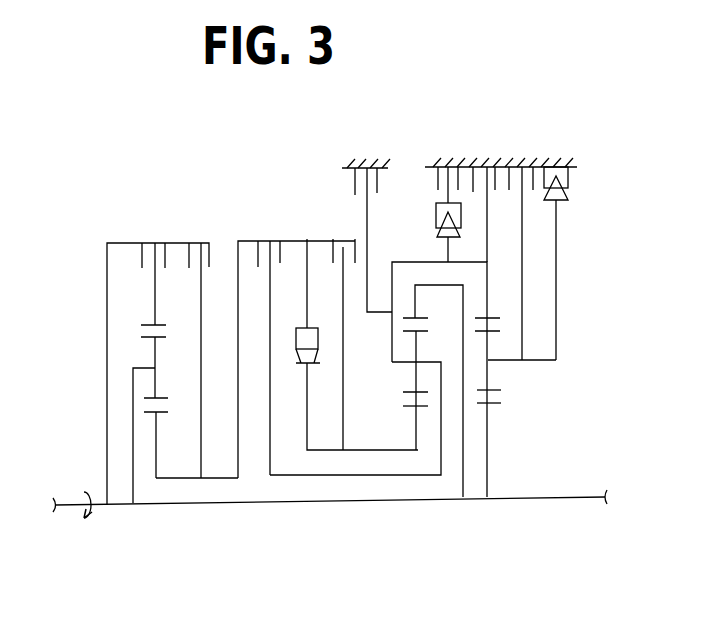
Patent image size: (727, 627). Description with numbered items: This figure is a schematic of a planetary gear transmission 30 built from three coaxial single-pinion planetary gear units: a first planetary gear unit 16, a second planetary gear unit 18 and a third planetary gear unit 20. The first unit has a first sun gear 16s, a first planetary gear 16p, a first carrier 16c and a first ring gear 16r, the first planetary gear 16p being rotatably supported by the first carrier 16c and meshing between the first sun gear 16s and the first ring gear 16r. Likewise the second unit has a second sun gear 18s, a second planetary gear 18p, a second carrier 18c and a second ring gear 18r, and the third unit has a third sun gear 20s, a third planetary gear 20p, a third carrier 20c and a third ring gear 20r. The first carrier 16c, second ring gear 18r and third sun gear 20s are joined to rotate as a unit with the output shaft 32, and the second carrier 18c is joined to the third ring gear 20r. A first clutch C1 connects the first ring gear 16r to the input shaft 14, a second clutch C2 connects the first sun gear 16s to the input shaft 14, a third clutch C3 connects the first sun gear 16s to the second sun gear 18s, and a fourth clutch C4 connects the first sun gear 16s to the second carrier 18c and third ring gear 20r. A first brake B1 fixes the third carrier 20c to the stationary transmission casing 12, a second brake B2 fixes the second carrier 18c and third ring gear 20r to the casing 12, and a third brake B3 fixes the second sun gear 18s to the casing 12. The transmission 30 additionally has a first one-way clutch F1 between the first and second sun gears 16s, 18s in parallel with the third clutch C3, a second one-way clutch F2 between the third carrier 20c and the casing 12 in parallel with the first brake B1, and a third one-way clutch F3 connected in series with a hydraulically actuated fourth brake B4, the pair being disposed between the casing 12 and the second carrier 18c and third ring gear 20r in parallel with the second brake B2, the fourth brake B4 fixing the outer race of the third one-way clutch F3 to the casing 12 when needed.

The planetary gear transmission 30 is at (139, 149).
The transmission casing 12 is at (368, 167).
The input shaft 14 is at (63, 503).
The first planetary gear unit 16 is at (145, 393).
The first ring gear 16r is at (150, 324).
The first carrier 16c is at (140, 366).
The first planetary gear 16p is at (158, 338).
The first sun gear 16s is at (160, 414).
The second planetary gear unit 18 is at (378, 406).
The second ring gear 18r is at (407, 312).
The second carrier 18c is at (398, 365).
The second planetary gear 18p is at (402, 392).
The second sun gear 18s is at (404, 408).
The third planetary gear unit 20 is at (537, 427).
The third ring gear 20r is at (490, 316).
The third carrier 20c is at (492, 362).
The third planetary gear 20p is at (495, 388).
The third sun gear 20s is at (492, 408).
The output shaft 32 is at (574, 495).
The first clutch C1 is at (143, 260).
The second clutch C2 is at (208, 262).
The third clutch C3 is at (333, 262).
The fourth clutch C4 is at (262, 262).
The first brake B1 is at (509, 180).
The second brake B2 is at (473, 182).
The third brake B3 is at (355, 181).
The fourth brake B4 is at (437, 181).
The first one-way clutch F1 is at (293, 313).
The second one-way clutch F2 is at (575, 176).
The third one-way clutch F3 is at (433, 226).